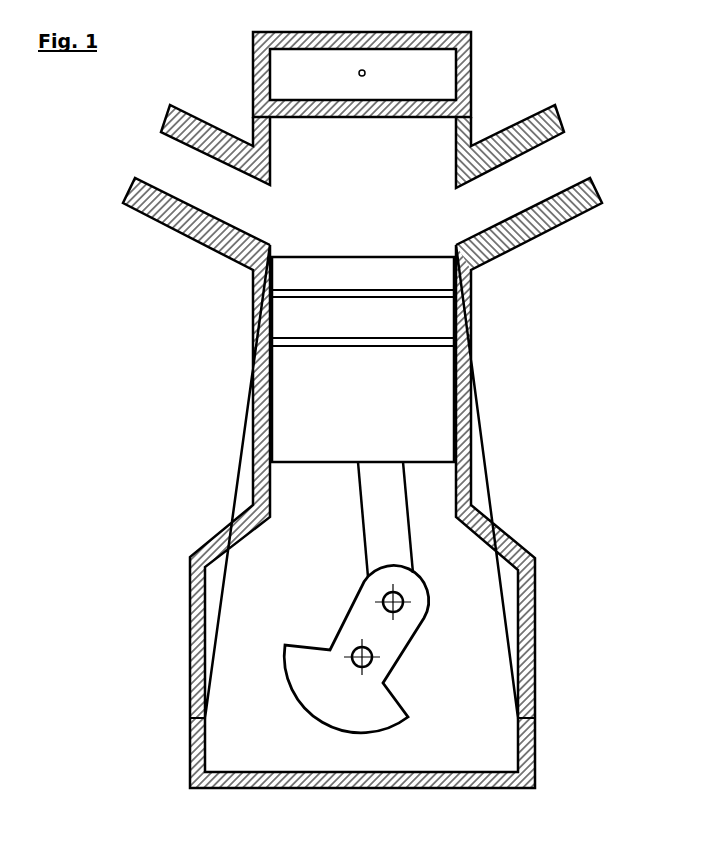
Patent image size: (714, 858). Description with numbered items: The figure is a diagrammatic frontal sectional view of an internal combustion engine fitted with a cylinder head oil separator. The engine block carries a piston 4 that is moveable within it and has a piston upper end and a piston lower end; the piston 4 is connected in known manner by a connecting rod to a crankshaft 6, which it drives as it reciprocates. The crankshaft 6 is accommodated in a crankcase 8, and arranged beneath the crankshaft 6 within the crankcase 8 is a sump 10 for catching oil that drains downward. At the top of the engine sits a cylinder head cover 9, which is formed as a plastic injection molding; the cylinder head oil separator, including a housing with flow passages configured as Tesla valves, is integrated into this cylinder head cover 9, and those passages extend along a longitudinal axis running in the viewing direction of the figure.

The piston 4 is at (417, 377).
The crankshaft 6 is at (373, 650).
The crankcase 8 is at (530, 612).
The cylinder head cover 9 is at (480, 52).
The sump 10 is at (528, 760).